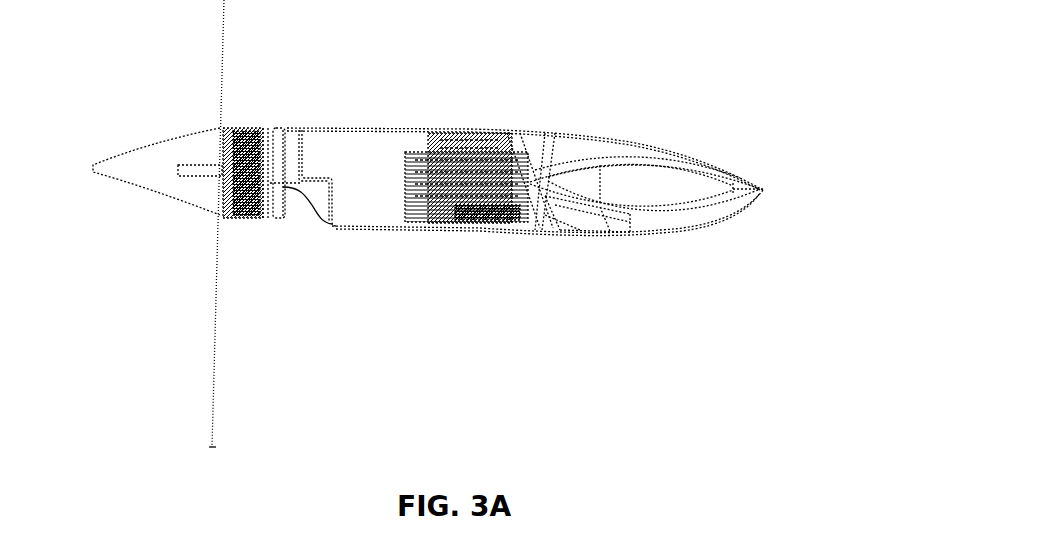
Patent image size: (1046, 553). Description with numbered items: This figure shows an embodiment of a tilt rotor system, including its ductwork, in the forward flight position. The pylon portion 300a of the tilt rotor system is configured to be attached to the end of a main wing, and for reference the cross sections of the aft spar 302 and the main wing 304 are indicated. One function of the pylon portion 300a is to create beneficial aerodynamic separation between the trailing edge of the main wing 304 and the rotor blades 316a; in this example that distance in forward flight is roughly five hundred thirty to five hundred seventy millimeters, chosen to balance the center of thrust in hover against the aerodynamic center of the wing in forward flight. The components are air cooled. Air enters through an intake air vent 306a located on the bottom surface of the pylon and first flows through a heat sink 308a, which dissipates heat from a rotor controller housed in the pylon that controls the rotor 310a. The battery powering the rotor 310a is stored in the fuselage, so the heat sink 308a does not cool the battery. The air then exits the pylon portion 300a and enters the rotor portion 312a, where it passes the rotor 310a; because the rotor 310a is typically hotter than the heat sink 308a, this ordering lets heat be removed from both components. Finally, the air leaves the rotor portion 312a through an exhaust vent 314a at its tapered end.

The pylon portion 300a is at (685, 227).
The aft spar 302 is at (602, 160).
The main wing 304 is at (670, 158).
The intake air vent 306a is at (598, 235).
The heat sink 308a is at (460, 150).
The rotor 310a is at (245, 127).
The rotor portion 312a is at (277, 222).
The exhaust vent 314a is at (93, 155).
The rotor blades 316a is at (210, 332).